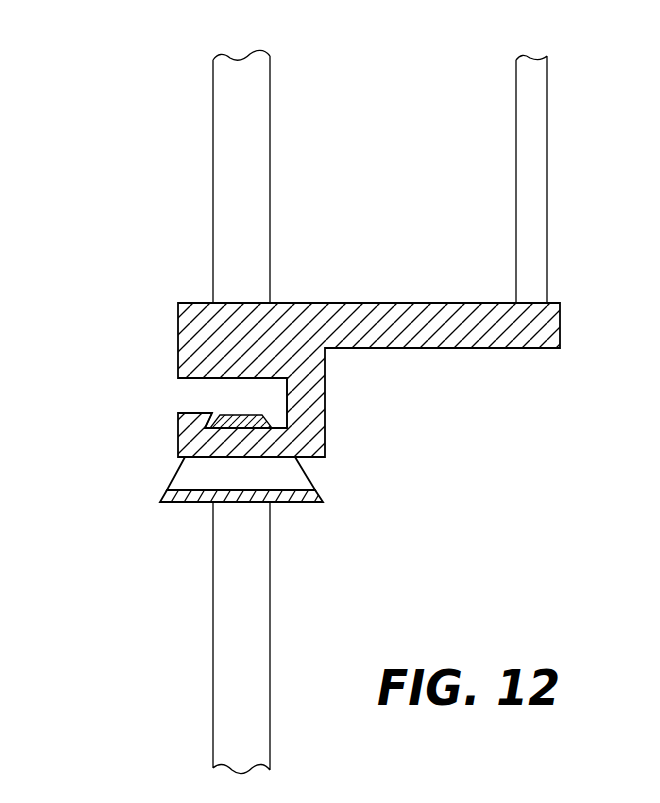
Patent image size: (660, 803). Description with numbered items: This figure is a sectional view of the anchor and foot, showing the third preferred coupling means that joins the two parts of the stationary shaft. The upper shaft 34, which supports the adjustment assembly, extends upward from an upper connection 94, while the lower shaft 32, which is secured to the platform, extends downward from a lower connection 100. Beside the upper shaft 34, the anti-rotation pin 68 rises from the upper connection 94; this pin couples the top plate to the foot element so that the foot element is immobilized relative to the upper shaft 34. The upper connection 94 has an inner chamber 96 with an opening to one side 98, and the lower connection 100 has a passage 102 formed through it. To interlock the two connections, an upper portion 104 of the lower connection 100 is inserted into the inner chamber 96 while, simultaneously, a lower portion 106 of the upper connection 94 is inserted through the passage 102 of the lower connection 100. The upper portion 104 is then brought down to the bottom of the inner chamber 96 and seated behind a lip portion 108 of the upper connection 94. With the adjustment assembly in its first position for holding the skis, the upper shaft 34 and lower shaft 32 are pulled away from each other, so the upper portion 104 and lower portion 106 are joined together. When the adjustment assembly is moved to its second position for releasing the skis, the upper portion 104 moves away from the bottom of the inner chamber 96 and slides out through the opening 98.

The lower shaft 32 is at (213, 648).
The upper shaft 34 is at (271, 162).
The anti-rotation pin 68 is at (547, 170).
The upper connection 94 is at (178, 332).
The inner chamber 96 is at (232, 390).
The opening to one side 98 is at (197, 403).
The lower connection 100 is at (185, 503).
The passage 102 is at (207, 475).
The upper portion 104 is at (243, 415).
The lower portion 106 is at (255, 447).
The lip portion 108 is at (203, 429).